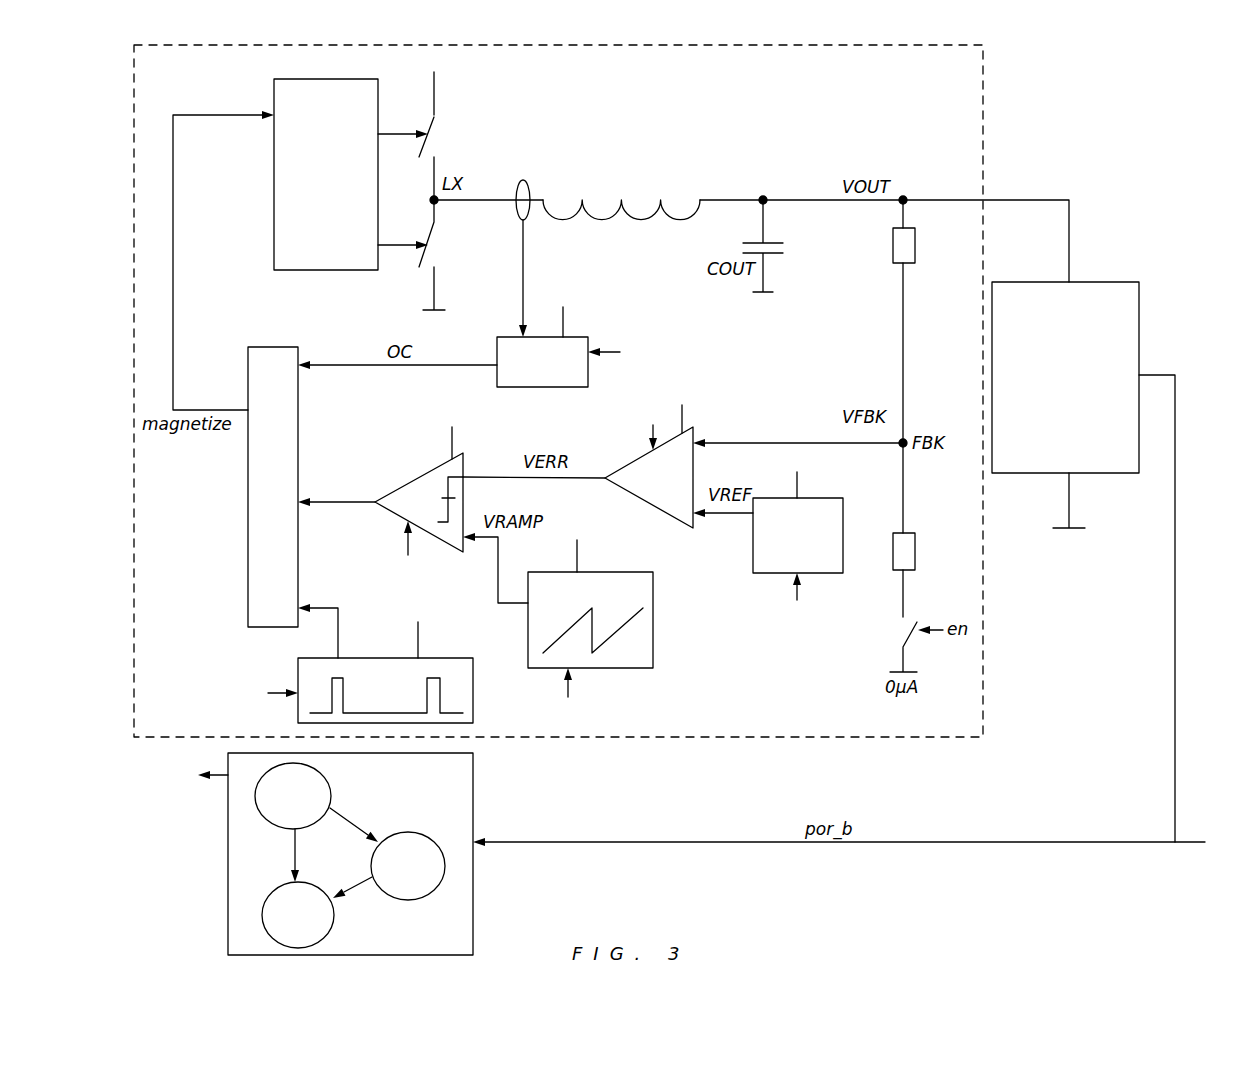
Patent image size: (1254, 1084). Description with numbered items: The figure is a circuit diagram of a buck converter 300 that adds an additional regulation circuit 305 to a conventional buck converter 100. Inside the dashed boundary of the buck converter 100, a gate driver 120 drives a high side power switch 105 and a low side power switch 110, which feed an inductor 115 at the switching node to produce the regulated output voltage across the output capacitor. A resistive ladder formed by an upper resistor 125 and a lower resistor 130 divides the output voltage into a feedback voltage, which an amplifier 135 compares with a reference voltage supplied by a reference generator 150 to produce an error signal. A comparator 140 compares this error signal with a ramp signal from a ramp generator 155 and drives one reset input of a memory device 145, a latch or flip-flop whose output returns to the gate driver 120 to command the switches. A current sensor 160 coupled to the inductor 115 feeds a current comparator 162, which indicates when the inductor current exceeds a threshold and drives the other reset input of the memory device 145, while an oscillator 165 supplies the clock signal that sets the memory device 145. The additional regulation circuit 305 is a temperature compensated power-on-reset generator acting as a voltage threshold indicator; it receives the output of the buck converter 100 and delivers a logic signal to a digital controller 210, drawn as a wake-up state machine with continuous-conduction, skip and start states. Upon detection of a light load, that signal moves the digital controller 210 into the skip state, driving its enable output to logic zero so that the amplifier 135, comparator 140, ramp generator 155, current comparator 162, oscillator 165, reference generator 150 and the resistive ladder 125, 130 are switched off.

The buck converter 100 is at (985, 127).
The high side power switch 105 is at (453, 126).
The low side power switch 110 is at (444, 270).
The inductor 115 is at (636, 196).
The gate driver 120 is at (345, 79).
The resistor ROH 125 is at (915, 232).
The resistor ROL 130 is at (915, 538).
The amplifier 135 is at (611, 474).
The comparator 140 is at (413, 480).
The memory device 145 is at (290, 347).
The reference generator 150 is at (753, 533).
The ramp generator 155 is at (603, 668).
The current sensor 160 is at (524, 180).
The current comparator 162 is at (588, 382).
The oscillator 165 is at (298, 670).
The digital controller 210 is at (228, 826).
The buck converter 300 is at (775, 878).
The additional regulation circuit 305 is at (1047, 473).